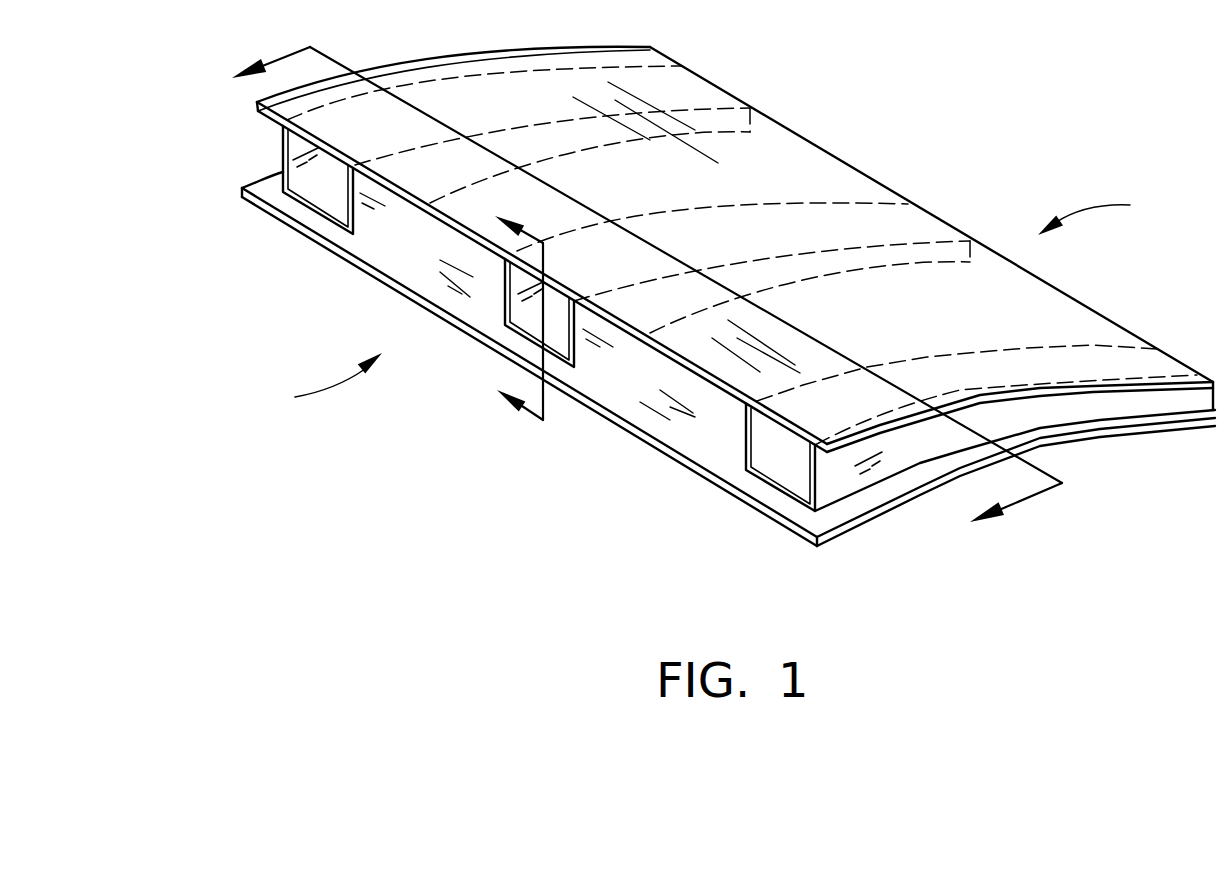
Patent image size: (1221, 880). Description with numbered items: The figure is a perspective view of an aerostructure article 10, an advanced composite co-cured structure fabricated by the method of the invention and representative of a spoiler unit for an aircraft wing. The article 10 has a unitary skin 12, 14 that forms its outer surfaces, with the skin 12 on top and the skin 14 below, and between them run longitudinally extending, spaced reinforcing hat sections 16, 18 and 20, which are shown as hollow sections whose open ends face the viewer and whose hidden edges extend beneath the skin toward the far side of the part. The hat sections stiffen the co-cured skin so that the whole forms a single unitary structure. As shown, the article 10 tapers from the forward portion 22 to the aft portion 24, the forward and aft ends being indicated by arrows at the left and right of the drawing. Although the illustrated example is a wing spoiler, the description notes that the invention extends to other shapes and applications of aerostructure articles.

The aerostructure article 10 is at (703, 296).
The unitary skin 12 is at (808, 182).
The unitary skin 14 is at (387, 263).
The reinforcing hat section 16 is at (510, 307).
The reinforcing hat section 18 is at (757, 443).
The reinforcing hat section 20 is at (327, 202).
The forward portion 22 is at (321, 382).
The aft portion 24 is at (1101, 214).